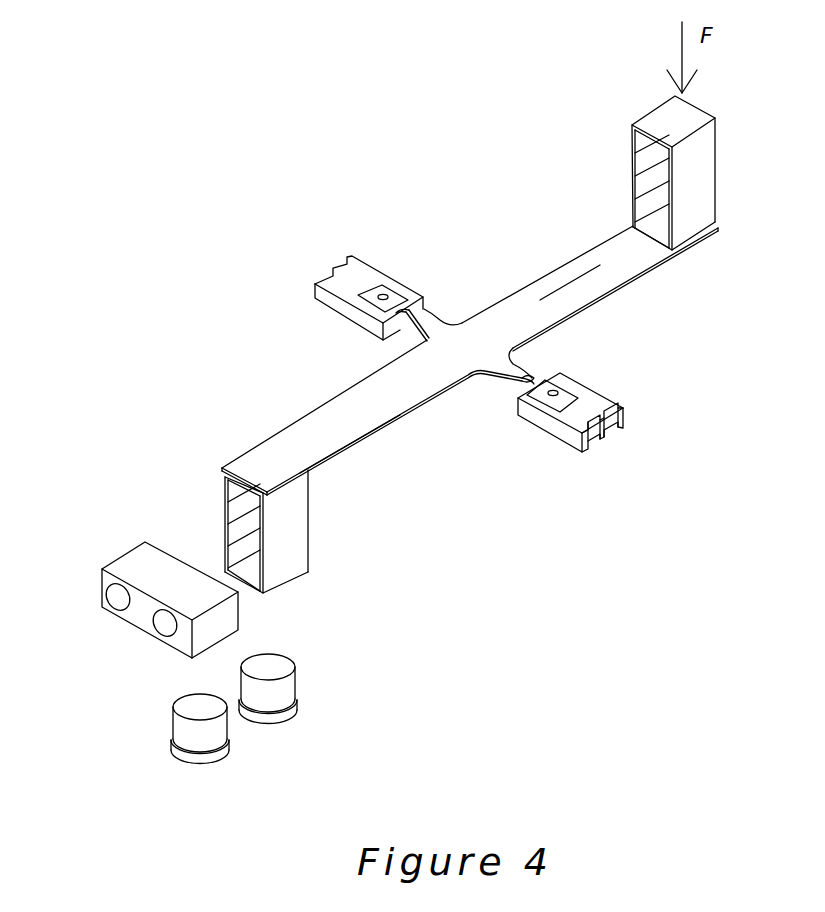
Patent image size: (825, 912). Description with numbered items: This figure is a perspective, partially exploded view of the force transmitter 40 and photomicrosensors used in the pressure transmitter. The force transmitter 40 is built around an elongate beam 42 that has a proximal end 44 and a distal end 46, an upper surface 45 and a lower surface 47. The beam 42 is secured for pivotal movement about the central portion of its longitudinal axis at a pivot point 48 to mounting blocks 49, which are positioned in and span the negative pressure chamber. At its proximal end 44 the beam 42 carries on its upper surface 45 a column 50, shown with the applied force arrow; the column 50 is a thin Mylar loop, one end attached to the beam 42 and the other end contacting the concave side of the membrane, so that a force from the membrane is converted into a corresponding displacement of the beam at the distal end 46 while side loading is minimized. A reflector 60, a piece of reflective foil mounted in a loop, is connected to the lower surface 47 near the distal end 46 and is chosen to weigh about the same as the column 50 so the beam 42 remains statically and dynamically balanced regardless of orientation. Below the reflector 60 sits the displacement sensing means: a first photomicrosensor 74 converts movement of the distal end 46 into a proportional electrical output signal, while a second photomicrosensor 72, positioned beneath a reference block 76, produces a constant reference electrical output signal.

The force transmitter 40 is at (263, 393).
The beam 42 is at (477, 357).
The proximal end 44 is at (625, 255).
The upper surface 45 is at (518, 310).
The distal end 46 is at (262, 460).
The lower surface 47 is at (355, 452).
The pivot point 48 is at (377, 330).
The mounting blocks 49 is at (313, 305).
The column 50 is at (700, 188).
The reflector 60 is at (285, 532).
The second photomicrosensor 72 is at (300, 698).
The first photomicrosensor 74 is at (170, 755).
The reference block 76 is at (169, 600).